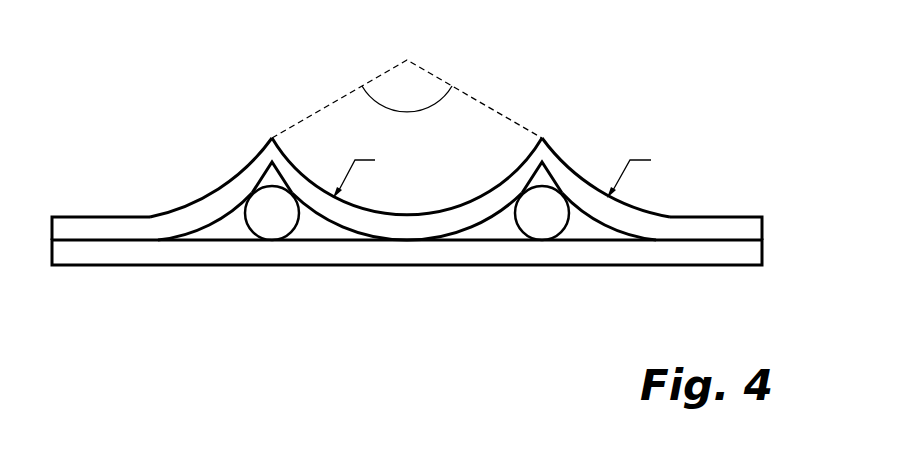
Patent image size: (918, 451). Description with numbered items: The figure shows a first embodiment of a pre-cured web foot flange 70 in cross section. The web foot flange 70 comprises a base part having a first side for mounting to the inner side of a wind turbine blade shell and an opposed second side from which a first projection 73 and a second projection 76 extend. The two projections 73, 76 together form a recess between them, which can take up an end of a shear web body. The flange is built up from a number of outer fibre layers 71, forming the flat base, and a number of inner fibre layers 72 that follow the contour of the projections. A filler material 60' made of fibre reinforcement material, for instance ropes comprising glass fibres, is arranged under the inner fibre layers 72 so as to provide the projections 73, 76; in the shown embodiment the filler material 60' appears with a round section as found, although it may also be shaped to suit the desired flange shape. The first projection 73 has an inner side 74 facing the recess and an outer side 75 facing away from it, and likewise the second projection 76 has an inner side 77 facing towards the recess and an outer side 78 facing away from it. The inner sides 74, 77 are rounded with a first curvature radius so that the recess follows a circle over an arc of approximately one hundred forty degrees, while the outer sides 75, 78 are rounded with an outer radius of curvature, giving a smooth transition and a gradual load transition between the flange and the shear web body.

The pre-cured web foot flange 70 is at (658, 93).
The outer fibre layers 71 is at (598, 252).
The inner fibre layers 72 is at (698, 228).
The first projection 73 is at (273, 137).
The inner side of the first projection 74 is at (293, 162).
The outer side of the first projection 75 is at (227, 182).
The second projection 76 is at (546, 145).
The inner side of the second projection 77 is at (503, 176).
The outer side of the second projection 78 is at (585, 182).
The filler material 60' is at (403, 255).